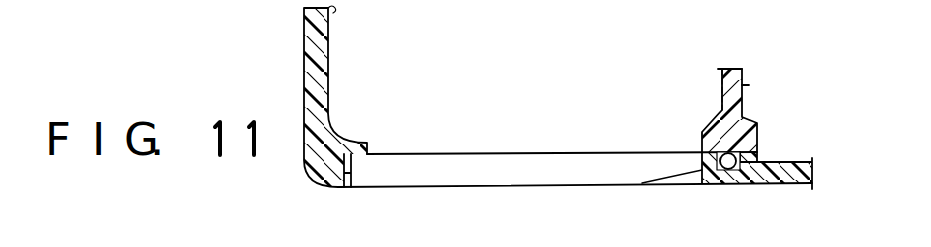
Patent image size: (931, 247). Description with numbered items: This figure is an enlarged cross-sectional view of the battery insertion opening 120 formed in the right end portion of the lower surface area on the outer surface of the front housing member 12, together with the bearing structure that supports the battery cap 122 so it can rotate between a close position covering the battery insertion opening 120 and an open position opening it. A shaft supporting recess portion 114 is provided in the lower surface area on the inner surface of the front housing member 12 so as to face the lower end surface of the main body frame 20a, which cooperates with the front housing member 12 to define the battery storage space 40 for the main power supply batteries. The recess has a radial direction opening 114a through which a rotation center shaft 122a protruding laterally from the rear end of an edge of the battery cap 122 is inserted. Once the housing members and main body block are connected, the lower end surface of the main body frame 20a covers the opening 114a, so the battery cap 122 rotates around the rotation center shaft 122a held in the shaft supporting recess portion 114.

The front housing member 12 is at (328, 45).
The battery insertion opening 120 is at (351, 173).
The battery cap 122 is at (508, 160).
The rotation center shaft 122a is at (728, 169).
The shaft supporting recess portion 114 is at (758, 157).
The opening 114a is at (757, 117).
The main body frame 20a is at (745, 80).
The battery storage space 40 is at (722, 83).